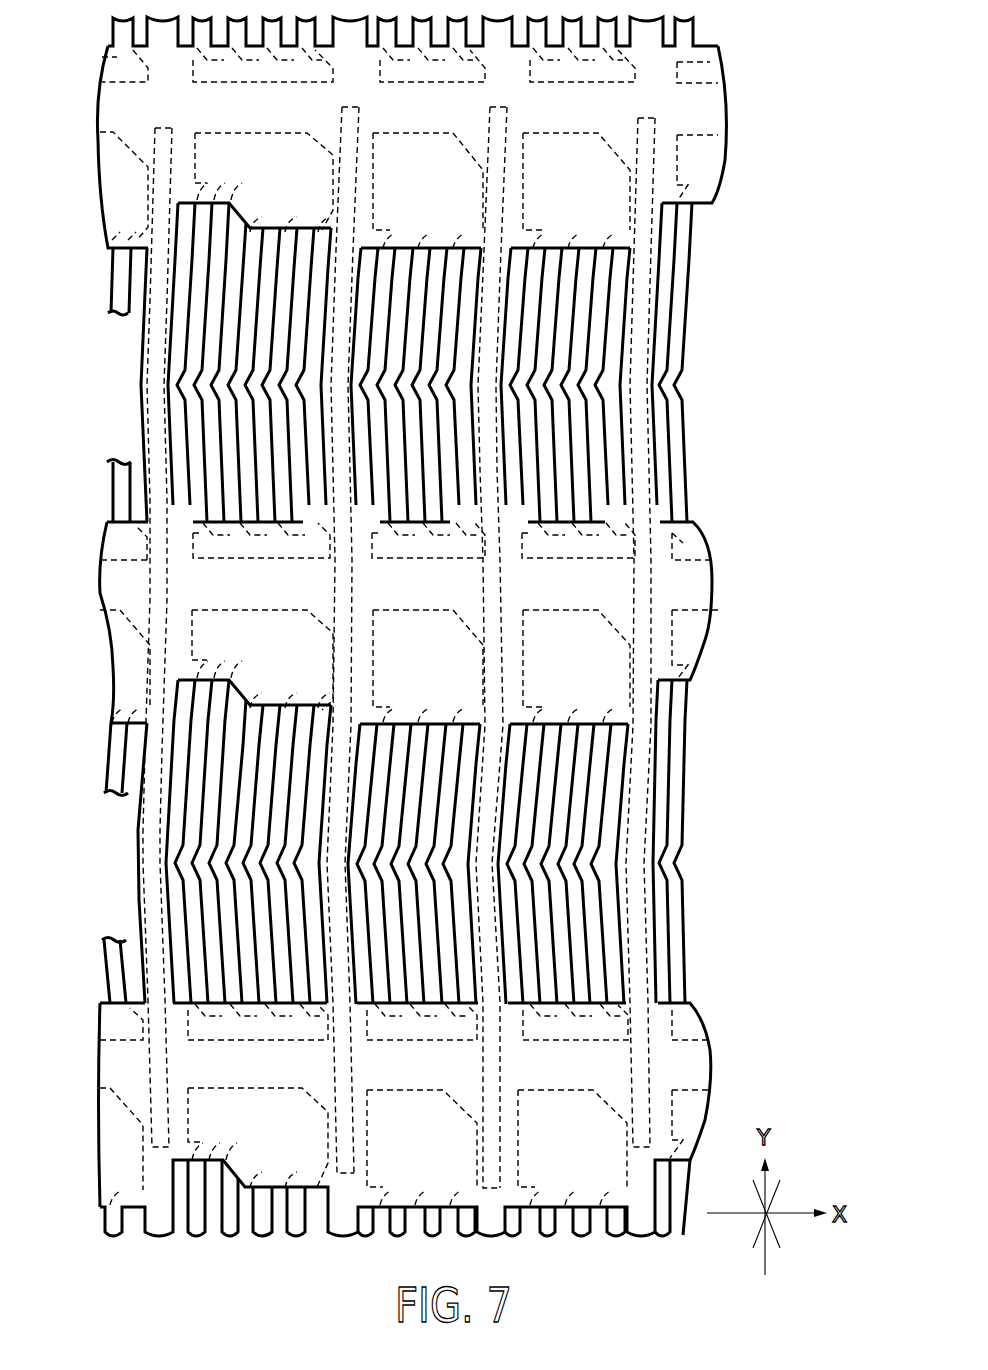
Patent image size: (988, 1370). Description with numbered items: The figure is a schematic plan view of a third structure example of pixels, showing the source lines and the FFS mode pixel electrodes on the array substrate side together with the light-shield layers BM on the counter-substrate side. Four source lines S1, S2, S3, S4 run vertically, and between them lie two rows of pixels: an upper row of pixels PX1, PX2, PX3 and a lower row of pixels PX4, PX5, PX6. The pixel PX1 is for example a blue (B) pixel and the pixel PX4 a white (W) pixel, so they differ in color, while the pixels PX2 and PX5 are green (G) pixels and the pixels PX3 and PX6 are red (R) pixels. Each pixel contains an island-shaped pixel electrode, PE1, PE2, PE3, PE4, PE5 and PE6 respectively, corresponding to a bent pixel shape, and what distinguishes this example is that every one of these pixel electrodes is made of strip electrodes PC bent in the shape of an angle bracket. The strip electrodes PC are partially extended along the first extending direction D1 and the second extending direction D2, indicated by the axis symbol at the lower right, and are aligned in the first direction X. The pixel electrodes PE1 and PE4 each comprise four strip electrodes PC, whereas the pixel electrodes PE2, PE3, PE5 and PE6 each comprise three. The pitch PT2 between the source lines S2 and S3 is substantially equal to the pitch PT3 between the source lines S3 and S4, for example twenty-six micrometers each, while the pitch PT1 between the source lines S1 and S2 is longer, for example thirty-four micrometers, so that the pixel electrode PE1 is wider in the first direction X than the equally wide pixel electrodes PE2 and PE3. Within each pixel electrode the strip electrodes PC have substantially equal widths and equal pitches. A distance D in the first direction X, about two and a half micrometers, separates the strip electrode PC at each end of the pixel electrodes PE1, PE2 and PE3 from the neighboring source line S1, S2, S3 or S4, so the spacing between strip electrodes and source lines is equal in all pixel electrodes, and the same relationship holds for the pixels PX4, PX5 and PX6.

The light-shield layer BM is at (718, 115).
The source line S1 is at (164, 127).
The source line S2 is at (344, 106).
The source line S3 is at (496, 106).
The source line S4 is at (642, 117).
The pixel PX1 is at (173, 417).
The pixel PX2 is at (467, 432).
The pixel PX3 is at (617, 482).
The pixel PX4 is at (173, 740).
The pixel PX5 is at (468, 776).
The pixel PX6 is at (622, 749).
The pixel electrode PE1 is at (265, 131).
The pixel electrode PE2 is at (419, 131).
The pixel electrode PE3 is at (563, 131).
The pixel electrode PE4 is at (252, 1042).
The pixel electrode PE5 is at (430, 1042).
The pixel electrode PE6 is at (585, 1042).
The strip electrode PC is at (297, 328).
The distance D is at (637, 488).
The pitch PT1 is at (163, 538).
The pitch PT2 is at (497, 538).
The pitch PT3 is at (640, 538).
The first extending direction D1 is at (775, 1193).
The second extending direction D2 is at (756, 1193).